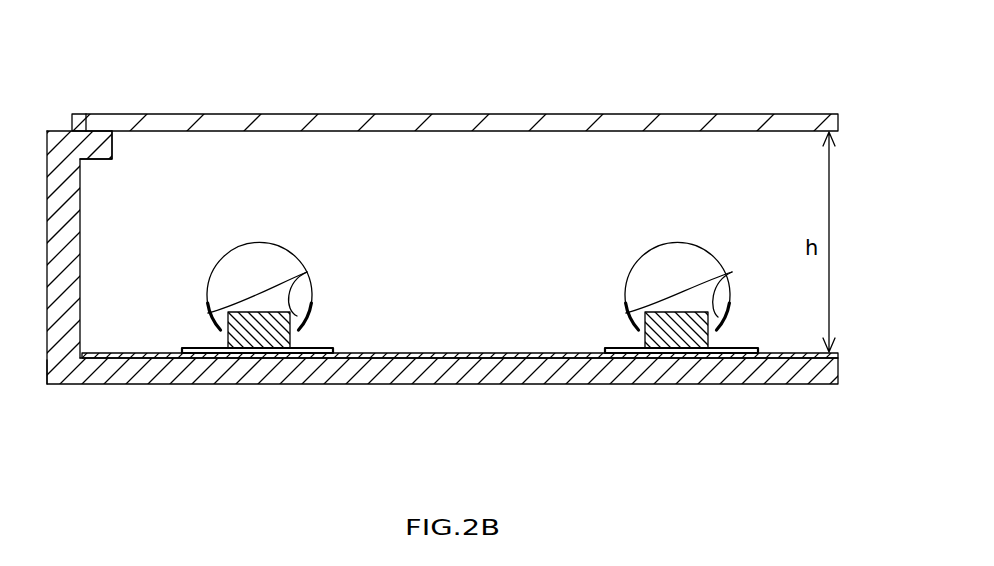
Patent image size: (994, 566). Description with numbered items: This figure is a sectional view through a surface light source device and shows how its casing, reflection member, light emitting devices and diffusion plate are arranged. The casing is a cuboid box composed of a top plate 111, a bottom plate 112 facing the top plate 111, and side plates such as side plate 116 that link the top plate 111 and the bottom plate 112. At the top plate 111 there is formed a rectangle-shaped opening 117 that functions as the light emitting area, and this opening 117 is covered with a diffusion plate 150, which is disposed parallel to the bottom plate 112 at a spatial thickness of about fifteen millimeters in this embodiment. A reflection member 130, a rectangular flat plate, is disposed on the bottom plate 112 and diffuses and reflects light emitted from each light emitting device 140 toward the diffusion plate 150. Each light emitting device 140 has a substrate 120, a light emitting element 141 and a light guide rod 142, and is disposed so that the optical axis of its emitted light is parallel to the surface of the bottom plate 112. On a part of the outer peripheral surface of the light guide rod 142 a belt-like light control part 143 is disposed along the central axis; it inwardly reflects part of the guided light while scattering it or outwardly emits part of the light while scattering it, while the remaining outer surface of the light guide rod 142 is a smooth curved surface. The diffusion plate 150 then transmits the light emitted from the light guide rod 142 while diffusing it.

The top plate 111 is at (80, 142).
The bottom plate 112 is at (110, 376).
The side plate 116 is at (72, 345).
The opening 117 is at (112, 150).
The diffusion plate 150 is at (220, 123).
The reflection member 130 is at (455, 353).
The light emitting device 140 is at (300, 445).
The light emitting element 141 is at (263, 353).
The substrate 120 is at (230, 353).
The light guide rod 142 is at (220, 287).
The light control part 143 is at (307, 272).